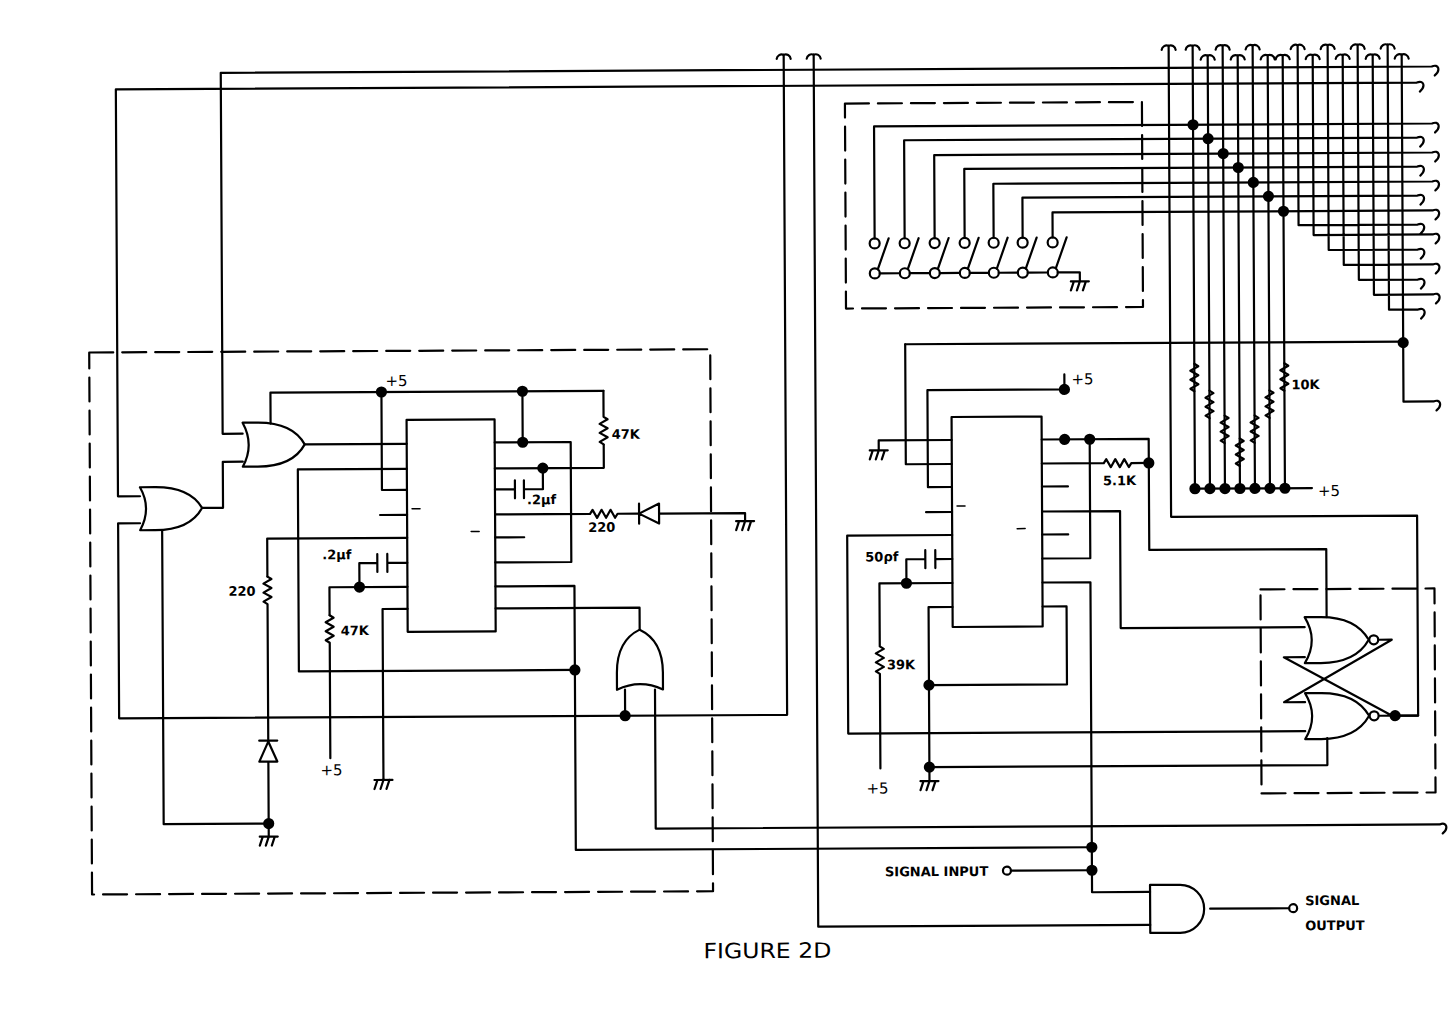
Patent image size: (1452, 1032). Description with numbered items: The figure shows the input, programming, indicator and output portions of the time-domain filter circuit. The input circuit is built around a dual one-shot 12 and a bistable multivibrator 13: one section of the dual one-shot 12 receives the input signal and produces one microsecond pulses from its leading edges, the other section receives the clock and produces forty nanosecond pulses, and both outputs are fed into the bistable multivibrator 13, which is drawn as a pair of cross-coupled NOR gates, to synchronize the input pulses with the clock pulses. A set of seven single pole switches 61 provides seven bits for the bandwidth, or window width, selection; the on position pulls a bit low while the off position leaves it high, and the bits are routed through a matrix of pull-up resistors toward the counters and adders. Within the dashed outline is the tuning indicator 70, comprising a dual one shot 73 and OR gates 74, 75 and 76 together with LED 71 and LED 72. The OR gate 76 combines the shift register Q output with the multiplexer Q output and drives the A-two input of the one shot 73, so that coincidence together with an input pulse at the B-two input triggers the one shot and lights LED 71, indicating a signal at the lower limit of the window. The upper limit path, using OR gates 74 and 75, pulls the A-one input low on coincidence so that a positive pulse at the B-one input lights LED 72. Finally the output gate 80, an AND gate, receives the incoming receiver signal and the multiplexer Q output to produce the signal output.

The tuning indicator 70 is at (497, 349).
The LED 71 is at (256, 746).
The LED 72 is at (658, 507).
The dual one shot 73 is at (430, 631).
The OR gate 74 is at (149, 484).
The OR gate 75 is at (284, 466).
The OR gate 76 is at (663, 657).
The bandwidth switches 61 is at (897, 309).
The dual one-shot 12 is at (1027, 629).
The bistable multivibrator 13 is at (1259, 650).
The output gate 80 is at (1170, 887).